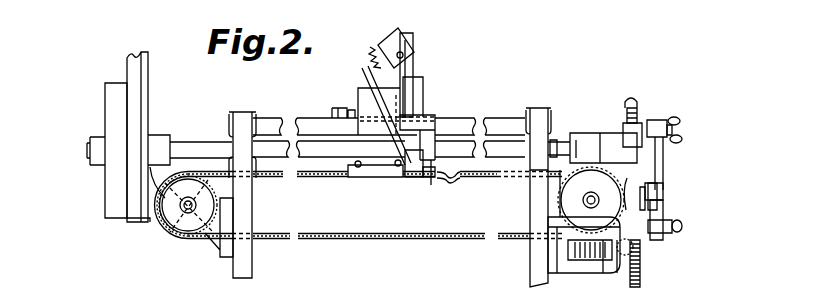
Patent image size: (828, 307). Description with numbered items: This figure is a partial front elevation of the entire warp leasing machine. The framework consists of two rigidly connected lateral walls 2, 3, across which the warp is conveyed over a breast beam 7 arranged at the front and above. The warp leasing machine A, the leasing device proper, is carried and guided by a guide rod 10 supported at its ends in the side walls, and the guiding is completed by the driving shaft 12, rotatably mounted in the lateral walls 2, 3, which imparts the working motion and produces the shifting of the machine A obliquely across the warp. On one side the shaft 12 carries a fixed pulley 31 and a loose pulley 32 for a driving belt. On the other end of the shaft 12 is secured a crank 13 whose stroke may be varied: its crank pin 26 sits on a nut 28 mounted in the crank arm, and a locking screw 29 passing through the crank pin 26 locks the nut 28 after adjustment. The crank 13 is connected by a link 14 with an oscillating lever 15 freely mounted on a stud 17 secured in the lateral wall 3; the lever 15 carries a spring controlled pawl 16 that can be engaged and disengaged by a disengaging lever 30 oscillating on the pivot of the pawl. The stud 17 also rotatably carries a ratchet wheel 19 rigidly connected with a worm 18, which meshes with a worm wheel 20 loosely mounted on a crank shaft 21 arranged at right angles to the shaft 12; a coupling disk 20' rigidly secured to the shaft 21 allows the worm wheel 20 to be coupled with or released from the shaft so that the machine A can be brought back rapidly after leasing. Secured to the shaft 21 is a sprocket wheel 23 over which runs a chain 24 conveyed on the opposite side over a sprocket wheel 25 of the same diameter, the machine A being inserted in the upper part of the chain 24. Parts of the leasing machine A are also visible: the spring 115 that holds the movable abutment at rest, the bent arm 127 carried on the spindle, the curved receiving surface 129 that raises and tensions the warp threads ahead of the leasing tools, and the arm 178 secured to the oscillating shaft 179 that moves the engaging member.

The lateral wall 2 is at (251, 267).
The lateral wall 3 is at (540, 259).
The breast beam 7 is at (274, 120).
The guide rod 10 is at (500, 142).
The driving shaft 12 is at (560, 140).
The crank 13 is at (642, 121).
The link 14 is at (663, 177).
The oscillating lever 15 is at (648, 238).
The spring controlled pawl 16 is at (640, 186).
The stud 17 is at (614, 273).
The worm 18 is at (592, 263).
The ratchet wheel 19 is at (641, 270).
The worm wheel 20 is at (523, 198).
The coupling disk 20' is at (458, 303).
The crank shaft 21 is at (584, 202).
The sprocket wheel 23 is at (573, 196).
The chain 24 is at (298, 174).
The sprocket wheel 25 is at (178, 235).
The crank pin 26 is at (662, 152).
The nut 28 is at (627, 145).
The locking screw 29 is at (683, 127).
The disengaging lever 30 is at (663, 197).
The fixed pulley 31 is at (152, 85).
The loose pulley 32 is at (110, 84).
The warp leasing machine A is at (402, 118).
The spring 115 is at (371, 51).
The arm 127 is at (380, 95).
The curved receiving surface 129 is at (447, 125).
The arm 178 is at (393, 160).
The oscillating shaft 179 is at (413, 173).